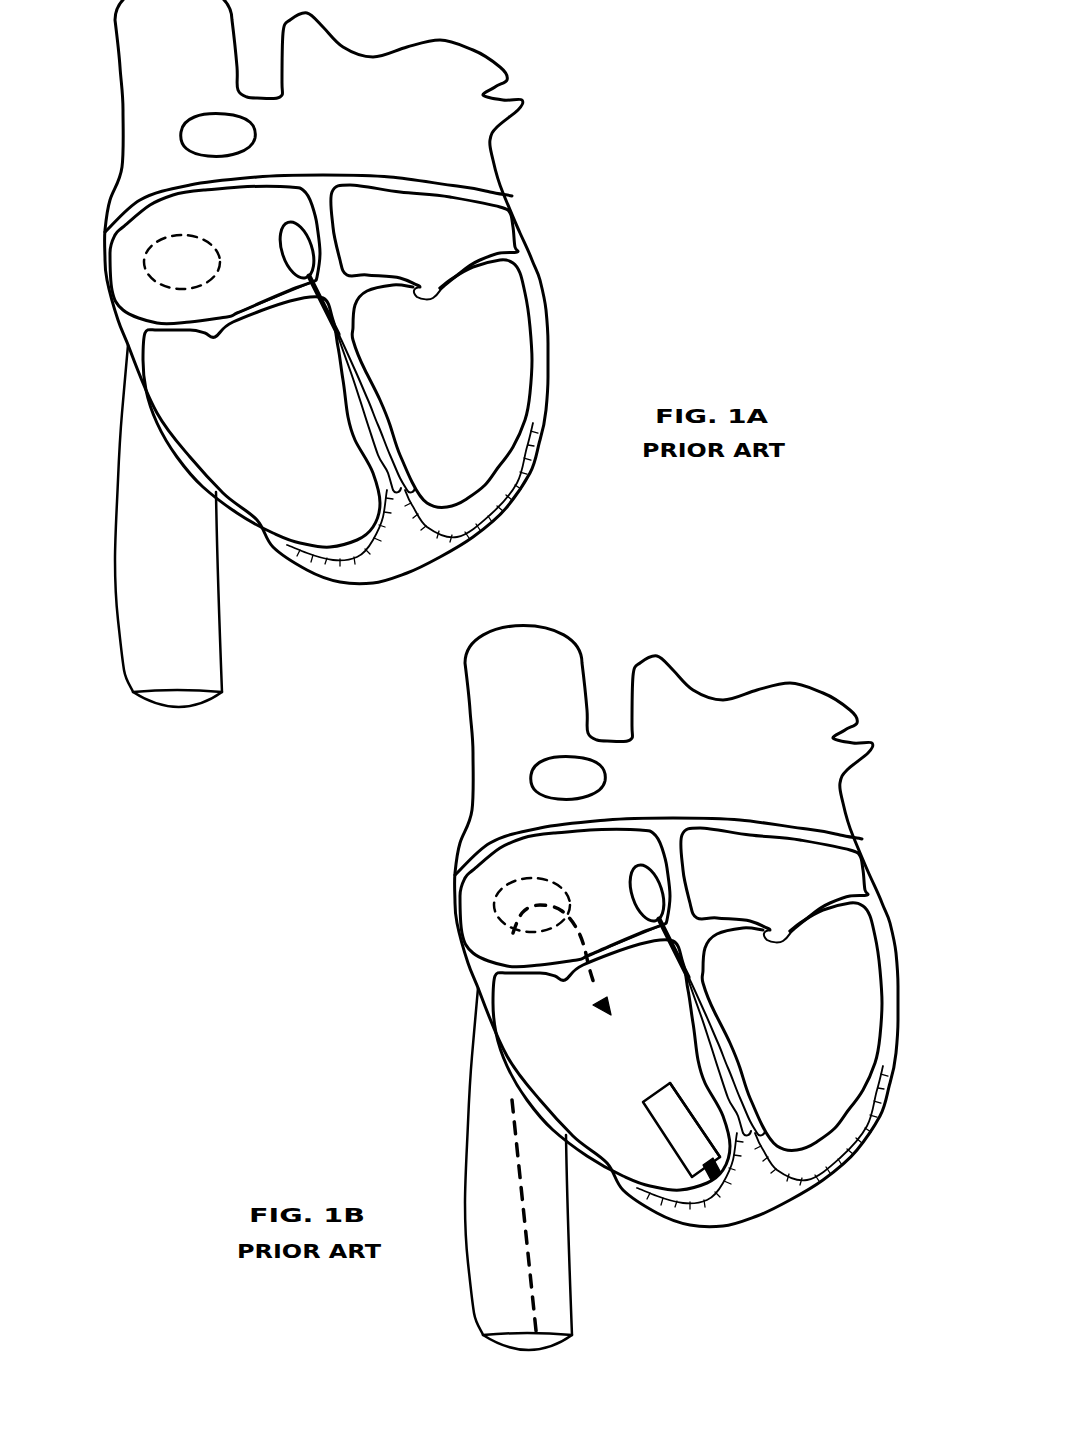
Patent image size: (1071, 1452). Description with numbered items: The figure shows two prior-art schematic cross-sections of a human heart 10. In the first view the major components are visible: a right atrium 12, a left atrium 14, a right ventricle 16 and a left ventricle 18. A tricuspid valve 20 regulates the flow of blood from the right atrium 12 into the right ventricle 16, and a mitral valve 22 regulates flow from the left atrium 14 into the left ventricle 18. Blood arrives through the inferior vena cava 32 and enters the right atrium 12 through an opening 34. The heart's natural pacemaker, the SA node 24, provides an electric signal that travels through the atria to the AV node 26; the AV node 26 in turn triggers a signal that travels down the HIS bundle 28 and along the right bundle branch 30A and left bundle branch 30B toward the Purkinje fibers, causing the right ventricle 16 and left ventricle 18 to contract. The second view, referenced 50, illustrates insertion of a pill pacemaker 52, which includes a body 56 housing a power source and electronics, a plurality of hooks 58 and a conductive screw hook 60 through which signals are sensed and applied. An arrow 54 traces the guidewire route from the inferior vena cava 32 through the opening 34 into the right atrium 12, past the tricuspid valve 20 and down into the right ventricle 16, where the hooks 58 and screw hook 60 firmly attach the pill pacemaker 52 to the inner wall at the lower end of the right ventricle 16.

In FIG. 1A, the heart 10 is at (608, 26).
In FIG. 1A, the right atrium 12 is at (234, 226).
In FIG. 1B, the right atrium 12 is at (565, 898).
In FIG. 1A, the left atrium 14 is at (426, 241).
In FIG. 1B, the left atrium 14 is at (774, 880).
In FIG. 1A, the right ventricle 16 is at (226, 450).
In FIG. 1B, the right ventricle 16 is at (611, 1065).
In FIG. 1A, the left ventricle 18 is at (478, 403).
In FIG. 1B, the left ventricle 18 is at (792, 1027).
In FIG. 1A, the tricuspid valve 20 is at (245, 321).
In FIG. 1B, the tricuspid valve 20 is at (597, 969).
In FIG. 1A, the mitral valve 22 is at (440, 295).
In FIG. 1B, the mitral valve 22 is at (778, 936).
In FIG. 1A, the sinoatrial (SA) node 24 is at (257, 135).
In FIG. 1B, the sinoatrial (SA) node 24 is at (589, 778).
In FIG. 1A, the atrioventricular (AV) node 26 is at (287, 250).
In FIG. 1B, the atrioventricular (AV) node 26 is at (671, 884).
In FIG. 1A, the HIS bundle 28 is at (334, 296).
In FIG. 1B, the HIS bundle 28 is at (695, 928).
In FIG. 1A, the right bundle branch 30A is at (367, 414).
In FIG. 1A, the left bundle branch 30B is at (388, 418).
In FIG. 1A, the inferior vena cava 32 is at (143, 607).
In FIG. 1B, the inferior vena cava 32 is at (497, 1169).
In FIG. 1A, the opening 34 is at (143, 262).
In FIG. 1B, the opening 34 is at (492, 905).
In FIG. 1B, the insertion of a pill pacemaker in the heart 50 is at (592, 926).
In FIG. 1B, the pill pacemaker 52 is at (681, 1111).
In FIG. 1B, the arrow 54 is at (546, 1122).
In FIG. 1B, the body 56 is at (668, 1120).
In FIG. 1B, the plurality of hooks 58 is at (757, 1110).
In FIG. 1B, the screw hook 60 is at (720, 1211).